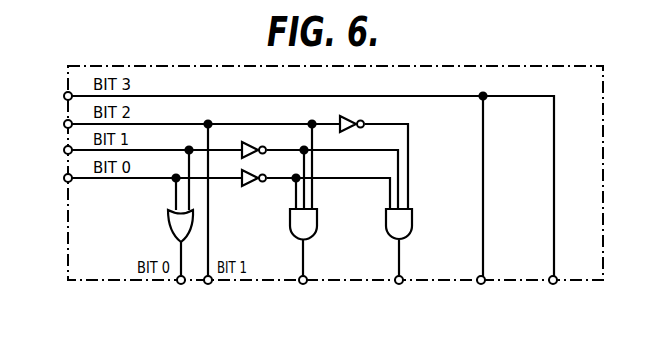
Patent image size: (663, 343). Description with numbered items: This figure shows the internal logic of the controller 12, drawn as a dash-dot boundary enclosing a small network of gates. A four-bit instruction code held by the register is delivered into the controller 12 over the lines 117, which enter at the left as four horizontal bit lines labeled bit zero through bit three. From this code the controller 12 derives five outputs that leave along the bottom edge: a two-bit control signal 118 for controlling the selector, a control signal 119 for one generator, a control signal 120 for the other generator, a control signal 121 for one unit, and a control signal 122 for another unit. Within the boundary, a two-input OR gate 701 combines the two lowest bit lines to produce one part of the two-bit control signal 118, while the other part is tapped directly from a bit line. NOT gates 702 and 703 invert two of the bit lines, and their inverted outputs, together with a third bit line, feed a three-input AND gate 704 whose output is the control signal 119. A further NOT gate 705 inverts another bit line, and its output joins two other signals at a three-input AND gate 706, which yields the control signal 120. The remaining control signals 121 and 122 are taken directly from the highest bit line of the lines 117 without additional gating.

The controller 12 is at (603, 160).
The lines 117 is at (58, 85).
The 2-bit control signal 118 is at (215, 287).
The control signal 119 is at (300, 285).
The control signal 120 is at (398, 285).
The control signal 121 is at (481, 285).
The control signal 122 is at (553, 285).
The 2-input OR gate 701 is at (169, 213).
The NOT gate 702 is at (250, 141).
The NOT gate 703 is at (250, 184).
The 3-input AND gate 704 is at (318, 216).
The NOT gate 705 is at (347, 116).
The 3-input AND gate 706 is at (413, 220).